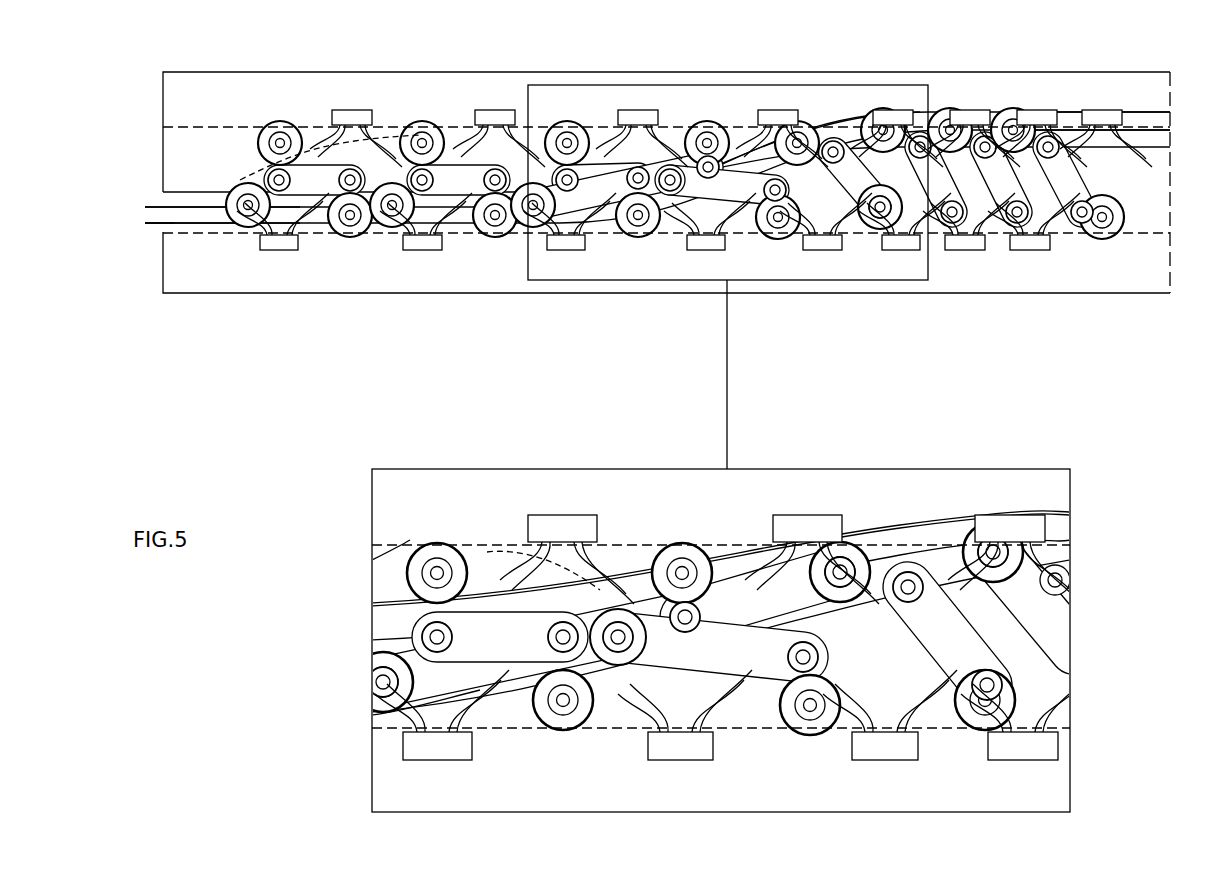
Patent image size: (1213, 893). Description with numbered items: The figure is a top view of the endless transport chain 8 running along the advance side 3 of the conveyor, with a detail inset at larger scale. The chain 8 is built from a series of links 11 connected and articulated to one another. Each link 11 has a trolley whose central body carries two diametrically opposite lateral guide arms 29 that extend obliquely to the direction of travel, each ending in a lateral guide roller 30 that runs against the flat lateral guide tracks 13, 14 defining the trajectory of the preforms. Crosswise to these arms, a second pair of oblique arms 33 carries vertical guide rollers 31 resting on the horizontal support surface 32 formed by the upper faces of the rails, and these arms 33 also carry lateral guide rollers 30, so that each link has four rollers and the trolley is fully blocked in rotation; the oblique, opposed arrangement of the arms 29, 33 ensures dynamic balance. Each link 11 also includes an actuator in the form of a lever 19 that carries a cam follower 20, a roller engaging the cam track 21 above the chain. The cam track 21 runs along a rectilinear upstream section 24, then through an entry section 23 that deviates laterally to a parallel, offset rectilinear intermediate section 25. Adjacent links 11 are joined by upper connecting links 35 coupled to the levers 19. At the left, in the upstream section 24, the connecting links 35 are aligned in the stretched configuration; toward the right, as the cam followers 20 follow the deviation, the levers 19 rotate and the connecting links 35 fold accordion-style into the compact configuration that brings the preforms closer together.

The advance side 3 is at (186, 70).
The endless transport chain 8 is at (1098, 186).
The link 11 is at (460, 128).
The lateral guide track 13 is at (218, 130).
The lateral guide track 14 is at (180, 230).
The actuator 19 is at (262, 175).
The cam follower 20 is at (240, 200).
The cam track 21 is at (1128, 108).
The entry section 23 is at (735, 128).
The rectilinear upstream section 24 is at (178, 190).
The rectilinear intermediate section 25 is at (1085, 84).
The lateral guide arm 29 is at (312, 130).
The lateral guide roller 30 is at (276, 128).
The vertical guide roller 31 is at (352, 112).
The horizontal support surface 32 is at (478, 82).
The arm 33 is at (362, 148).
The upper connecting link 35 is at (864, 640).